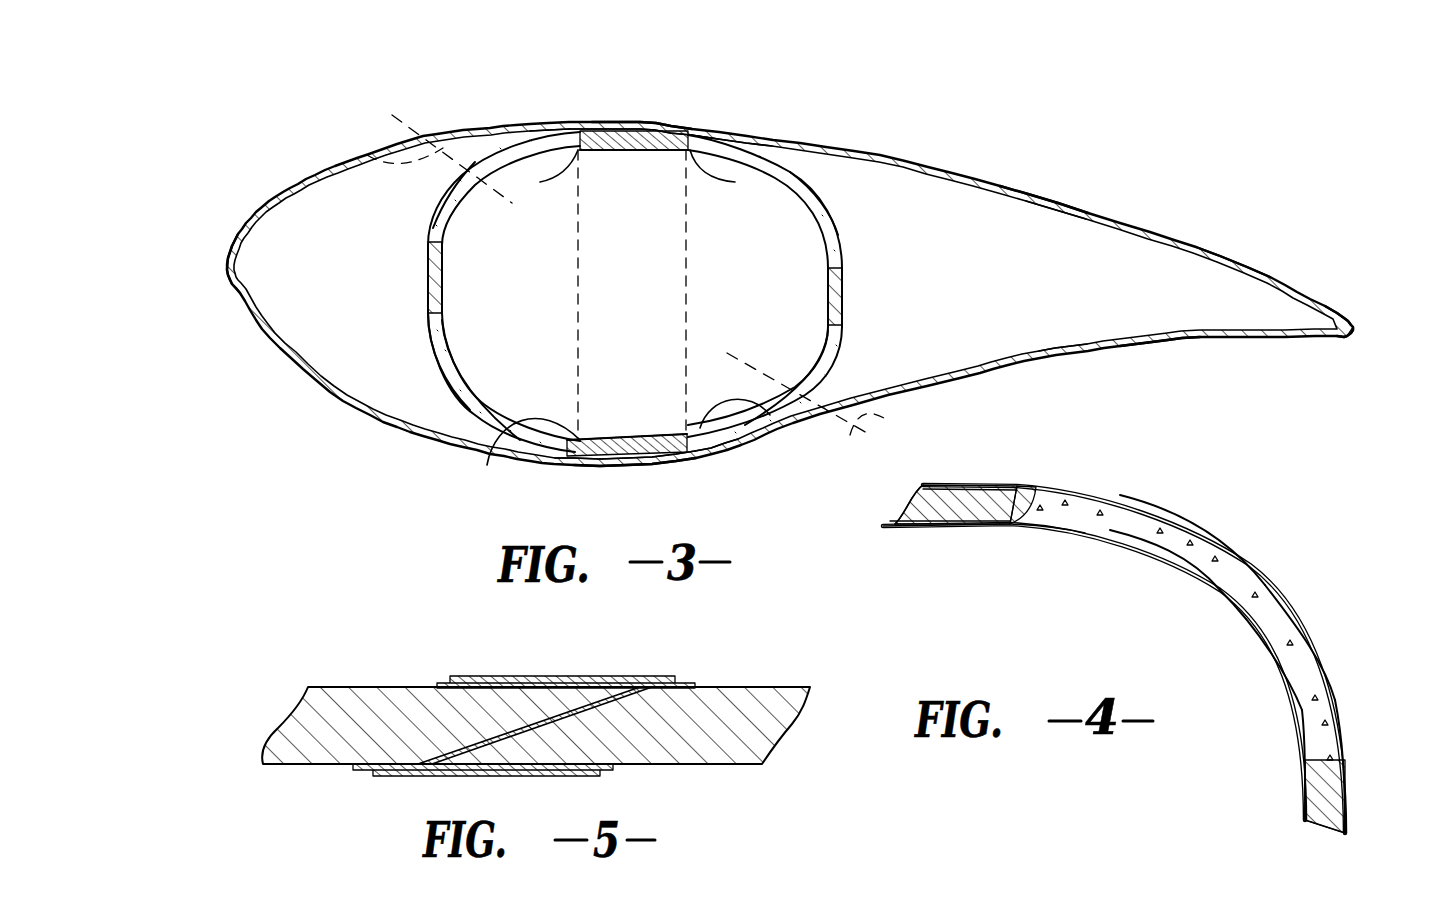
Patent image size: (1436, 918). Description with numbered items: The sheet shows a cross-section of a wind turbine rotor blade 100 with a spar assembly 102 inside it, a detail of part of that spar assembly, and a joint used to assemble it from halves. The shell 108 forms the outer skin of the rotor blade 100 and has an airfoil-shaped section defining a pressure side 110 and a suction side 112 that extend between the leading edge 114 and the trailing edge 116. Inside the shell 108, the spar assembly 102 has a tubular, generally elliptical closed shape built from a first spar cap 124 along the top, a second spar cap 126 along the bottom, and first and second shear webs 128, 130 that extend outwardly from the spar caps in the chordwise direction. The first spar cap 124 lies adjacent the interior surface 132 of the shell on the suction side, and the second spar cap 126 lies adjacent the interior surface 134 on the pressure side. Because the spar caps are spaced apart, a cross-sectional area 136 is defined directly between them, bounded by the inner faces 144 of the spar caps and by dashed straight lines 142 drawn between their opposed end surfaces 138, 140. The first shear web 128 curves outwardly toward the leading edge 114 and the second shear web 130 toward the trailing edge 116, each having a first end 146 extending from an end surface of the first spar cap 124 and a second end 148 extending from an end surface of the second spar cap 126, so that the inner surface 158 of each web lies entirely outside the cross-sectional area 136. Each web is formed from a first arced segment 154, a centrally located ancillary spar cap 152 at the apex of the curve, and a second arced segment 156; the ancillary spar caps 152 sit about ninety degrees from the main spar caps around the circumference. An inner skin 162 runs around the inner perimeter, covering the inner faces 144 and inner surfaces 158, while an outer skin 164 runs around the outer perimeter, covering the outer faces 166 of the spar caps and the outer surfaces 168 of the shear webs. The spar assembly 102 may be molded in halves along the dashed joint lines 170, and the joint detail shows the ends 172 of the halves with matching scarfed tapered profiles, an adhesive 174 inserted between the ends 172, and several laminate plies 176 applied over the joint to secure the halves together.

In FIG. 3, the rotor blade 100 is at (1240, 168).
In FIG. 3, the spar assembly 102 is at (935, 247).
In FIG. 4, the spar assembly 102 is at (1203, 495).
In FIG. 3, the shell 108 is at (1218, 252).
In FIG. 3, the pressure side 110 is at (1150, 346).
In FIG. 3, the suction side 112 is at (1090, 208).
In FIG. 3, the leading edge 114 is at (226, 262).
In FIG. 3, the trailing edge 116 is at (1355, 330).
In FIG. 3, the first spar cap 124 is at (680, 129).
In FIG. 4, the first spar cap 124 is at (935, 500).
In FIG. 3, the second spar cap 126 is at (665, 461).
In FIG. 3, the first shear web 128 is at (428, 345).
In FIG. 3, the second shear web 130 is at (842, 232).
In FIG. 4, the second shear web 130 is at (1315, 680).
In FIG. 3, the interior surface 132 is at (1052, 205).
In FIG. 3, the interior surface 134 is at (1045, 351).
In FIG. 3, the cross-sectional area 136 is at (655, 297).
In FIG. 3, the end surface 138 is at (560, 131).
In FIG. 3, the end surface 140 is at (715, 140).
In FIG. 4, the end surface 140 is at (1040, 505).
In FIG. 3, the straight lines 142 is at (578, 332).
In FIG. 3, the inner faces 144 is at (645, 160).
In FIG. 4, the inner faces 144 is at (975, 528).
In FIG. 3, the first end 146 is at (535, 160).
In FIG. 4, the first end 146 is at (1045, 530).
In FIG. 3, the second end 148 is at (530, 428).
In FIG. 3, the ancillary spar cap 152 is at (428, 275).
In FIG. 4, the ancillary spar cap 152 is at (1328, 820).
In FIG. 3, the first arced segment 154 is at (452, 190).
In FIG. 4, the first arced segment 154 is at (1262, 605).
In FIG. 3, the second arced segment 156 is at (450, 378).
In FIG. 3, the inner surface 158 is at (468, 200).
In FIG. 4, the inner surface 158 is at (1292, 686).
In FIG. 4, the inner skin 162 is at (1145, 553).
In FIG. 4, the outer skin 164 is at (1205, 548).
In FIG. 3, the outer faces 166 is at (625, 129).
In FIG. 4, the outer faces 166 is at (945, 485).
In FIG. 3, the outer surfaces 168 is at (428, 228).
In FIG. 4, the outer surfaces 168 is at (1285, 612).
In FIG. 3, the detail region 170 is at (372, 150).
In FIG. 5, the ends 172 is at (420, 728).
In FIG. 5, the adhesive 174 is at (615, 695).
In FIG. 5, the laminate plies 176 is at (498, 676).